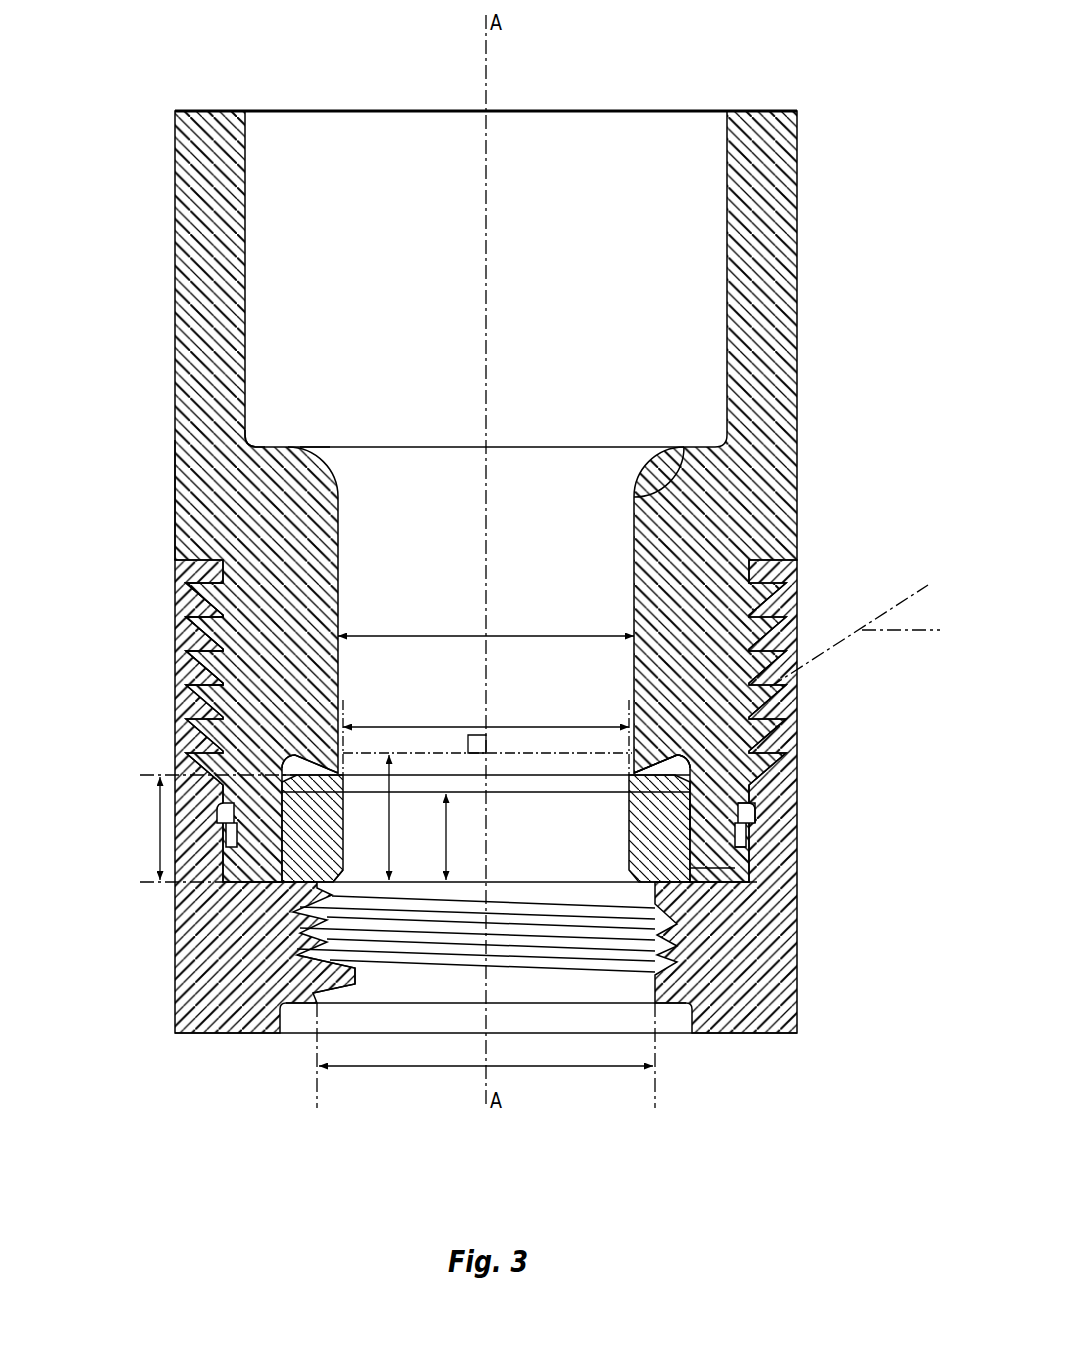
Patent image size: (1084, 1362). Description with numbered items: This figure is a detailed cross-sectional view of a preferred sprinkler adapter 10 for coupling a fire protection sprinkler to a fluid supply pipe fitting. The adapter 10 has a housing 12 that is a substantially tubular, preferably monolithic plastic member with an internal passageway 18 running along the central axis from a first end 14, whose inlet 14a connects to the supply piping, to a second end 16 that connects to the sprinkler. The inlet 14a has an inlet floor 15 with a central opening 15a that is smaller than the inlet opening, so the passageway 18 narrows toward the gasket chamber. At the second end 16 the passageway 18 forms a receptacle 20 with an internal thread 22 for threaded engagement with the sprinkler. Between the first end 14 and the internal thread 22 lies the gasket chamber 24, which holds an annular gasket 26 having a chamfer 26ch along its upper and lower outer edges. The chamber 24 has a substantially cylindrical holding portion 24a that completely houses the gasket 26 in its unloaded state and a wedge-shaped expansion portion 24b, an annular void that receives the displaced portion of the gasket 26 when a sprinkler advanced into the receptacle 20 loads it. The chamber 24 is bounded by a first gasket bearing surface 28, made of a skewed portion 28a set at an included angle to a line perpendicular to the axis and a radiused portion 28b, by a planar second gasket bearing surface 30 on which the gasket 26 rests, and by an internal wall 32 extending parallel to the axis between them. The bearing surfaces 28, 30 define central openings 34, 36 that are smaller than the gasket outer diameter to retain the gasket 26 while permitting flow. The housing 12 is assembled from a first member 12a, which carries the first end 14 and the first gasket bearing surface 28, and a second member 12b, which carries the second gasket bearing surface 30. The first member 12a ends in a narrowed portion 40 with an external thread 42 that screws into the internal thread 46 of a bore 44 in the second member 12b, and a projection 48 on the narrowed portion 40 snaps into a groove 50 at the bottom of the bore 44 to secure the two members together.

The sprinkler adapter 10 is at (887, 79).
The housing 12 is at (96, 450).
The first member 12a is at (206, 473).
The second member 12b is at (186, 597).
The first end 14 is at (781, 112).
The inlet 14a is at (655, 104).
The inlet floor 15 is at (268, 445).
The central opening of the inlet floor 15a is at (352, 437).
The second end 16 is at (756, 1036).
The internal passageway 18 is at (596, 327).
The receptacle 20 is at (313, 1104).
The internal thread 22 is at (692, 976).
The gasket chamber 24 is at (96, 747).
The holding portion 24a is at (360, 862).
The expansion portion 24b is at (286, 758).
The gasket 26 is at (692, 792).
The chamfer 26ch is at (328, 899).
The first gasket bearing surface 28 is at (862, 698).
The skewed portion 28a is at (670, 742).
The radiused portion 28b is at (692, 771).
The second gasket bearing surface 30 is at (724, 845).
The internal wall 32 is at (700, 821).
The central opening of the first gasket bearing surface 34 is at (405, 630).
The central opening of the second gasket bearing surface 36 is at (291, 1005).
The narrowed portion 40 is at (206, 637).
The external thread 42 is at (200, 682).
The bore 44 is at (722, 565).
The internal thread of the bore 46 is at (762, 626).
The projection 48 is at (724, 887).
The groove 50 is at (698, 868).